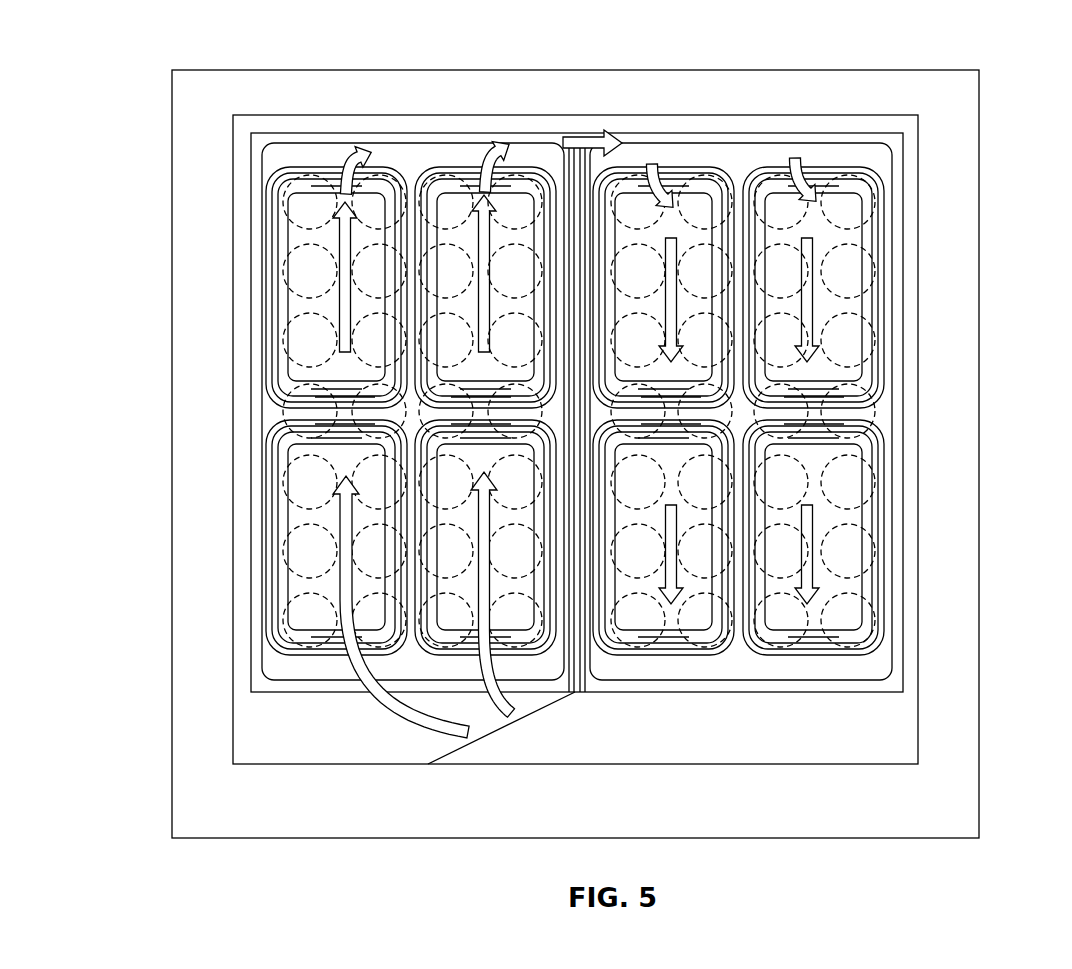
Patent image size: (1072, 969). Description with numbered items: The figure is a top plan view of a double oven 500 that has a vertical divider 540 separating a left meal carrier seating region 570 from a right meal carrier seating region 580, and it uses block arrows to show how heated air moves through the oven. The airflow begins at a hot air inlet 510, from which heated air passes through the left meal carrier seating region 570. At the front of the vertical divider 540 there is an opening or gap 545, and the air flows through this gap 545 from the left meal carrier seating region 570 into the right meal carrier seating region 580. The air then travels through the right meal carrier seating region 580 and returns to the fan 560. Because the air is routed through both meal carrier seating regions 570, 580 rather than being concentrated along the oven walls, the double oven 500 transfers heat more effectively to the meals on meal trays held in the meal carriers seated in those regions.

The double oven 500 is at (1013, 97).
The hot air inlet 510 is at (491, 741).
The vertical divider 540 is at (577, 308).
The opening or gap 545 is at (577, 127).
The fan 560 is at (734, 704).
The left meal carrier seating region 570 is at (420, 100).
The right meal carrier seating region 580 is at (735, 98).